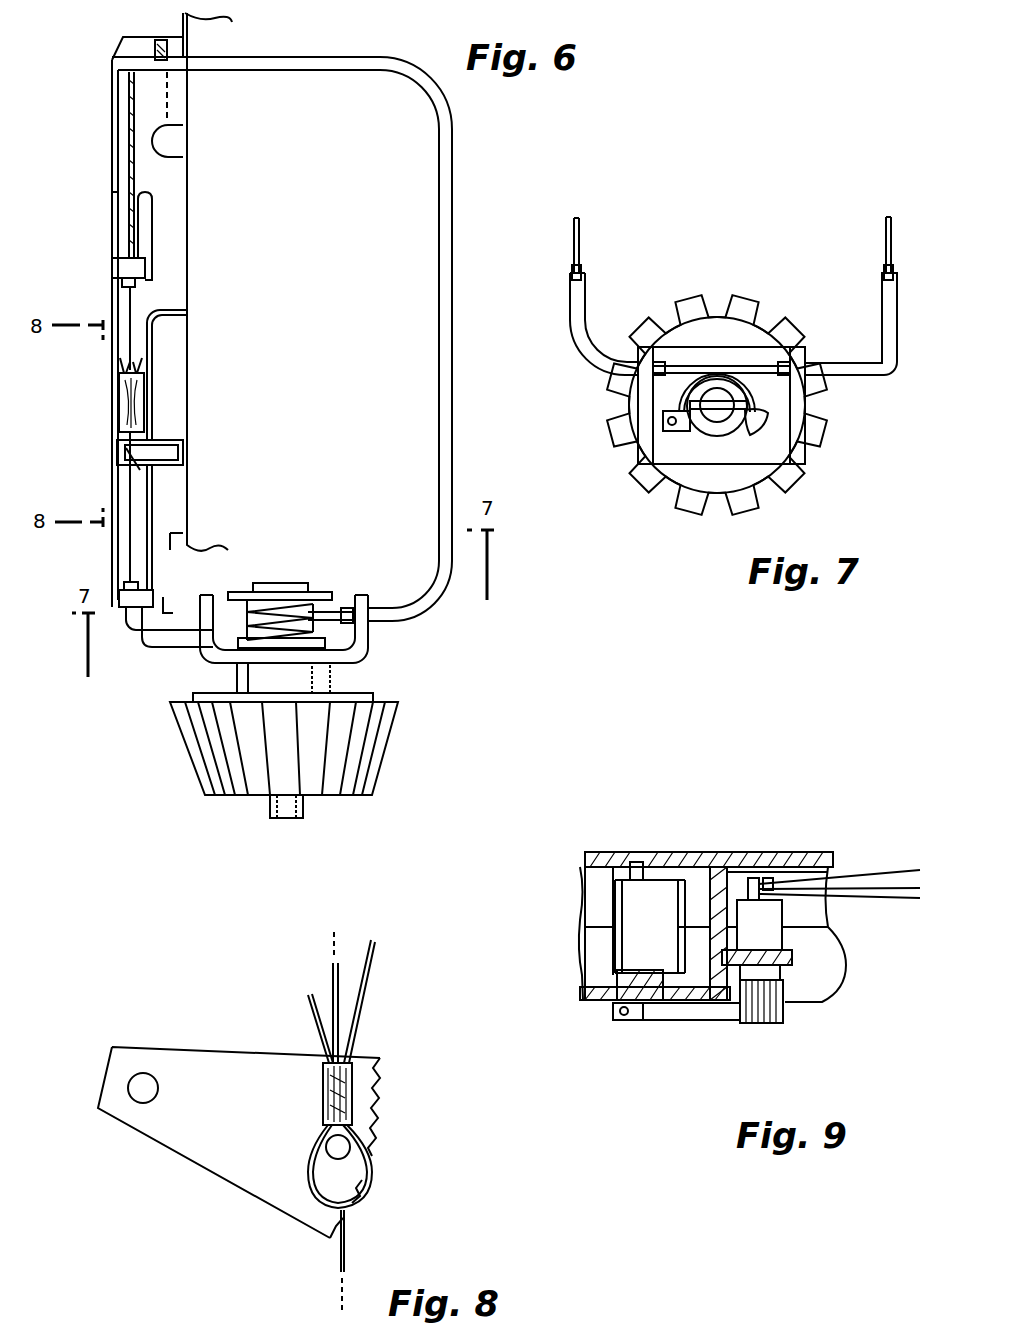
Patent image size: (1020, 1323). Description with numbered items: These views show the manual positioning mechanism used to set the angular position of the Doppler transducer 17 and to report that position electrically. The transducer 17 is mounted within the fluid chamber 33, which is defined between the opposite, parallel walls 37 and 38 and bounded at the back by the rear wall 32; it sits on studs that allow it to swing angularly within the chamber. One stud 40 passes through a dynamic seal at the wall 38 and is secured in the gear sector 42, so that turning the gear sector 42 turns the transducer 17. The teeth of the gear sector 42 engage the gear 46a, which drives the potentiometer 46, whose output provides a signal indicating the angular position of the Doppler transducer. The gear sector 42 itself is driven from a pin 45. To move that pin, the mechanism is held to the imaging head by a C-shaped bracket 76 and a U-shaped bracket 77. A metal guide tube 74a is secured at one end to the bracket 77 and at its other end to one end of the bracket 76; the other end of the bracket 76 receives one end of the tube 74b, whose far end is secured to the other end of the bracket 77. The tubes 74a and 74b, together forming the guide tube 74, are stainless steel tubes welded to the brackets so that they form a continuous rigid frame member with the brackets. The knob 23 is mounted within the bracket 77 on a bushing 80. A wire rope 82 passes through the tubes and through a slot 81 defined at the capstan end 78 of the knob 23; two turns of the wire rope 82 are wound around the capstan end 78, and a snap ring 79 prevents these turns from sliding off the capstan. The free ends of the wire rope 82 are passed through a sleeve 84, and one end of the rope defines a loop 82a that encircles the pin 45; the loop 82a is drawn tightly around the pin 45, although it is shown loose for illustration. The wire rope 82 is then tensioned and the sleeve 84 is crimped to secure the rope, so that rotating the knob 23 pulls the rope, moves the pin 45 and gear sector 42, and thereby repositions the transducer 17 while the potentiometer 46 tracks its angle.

In FIG. 9, the transducer 17 is at (668, 921).
In FIG. 6, the knob 23 is at (385, 735).
In FIG. 7, the knob 23 is at (690, 510).
In FIG. 9, the rear wall 32 is at (713, 895).
In FIG. 9, the fluid chamber 33 is at (590, 899).
In FIG. 9, the wall 37 is at (595, 855).
In FIG. 9, the wall 38 is at (585, 1000).
In FIG. 8, the stud 40 is at (143, 1073).
In FIG. 9, the stud 40 is at (640, 1022).
In FIG. 8, the gear sector 42 is at (225, 1167).
In FIG. 9, the gear sector 42 is at (693, 1022).
In FIG. 6, the pin 45 is at (180, 452).
In FIG. 8, the pin 45 is at (350, 1147).
In FIG. 9, the potentiometer 46 is at (770, 940).
In FIG. 9, the gear 46a is at (783, 1023).
In FIG. 7, the tube 74 is at (890, 378).
In FIG. 6, the metal guide tube 74a is at (452, 262).
In FIG. 6, the tube 74b is at (145, 650).
In FIG. 7, the tube 74b is at (580, 356).
In FIG. 6, the C-shaped bracket 76 is at (110, 268).
In FIG. 6, the U-shaped bracket 77 is at (368, 643).
In FIG. 7, the U-shaped bracket 77 is at (705, 347).
In FIG. 6, the capstan end 78 is at (275, 583).
In FIG. 7, the capstan end 78 is at (740, 398).
In FIG. 6, the snap ring 79 is at (320, 592).
In FIG. 7, the snap ring 79 is at (748, 435).
In FIG. 6, the bushing 80 is at (330, 675).
In FIG. 7, the slot 81 is at (692, 440).
In FIG. 6, the wire rope 82 is at (137, 298).
In FIG. 7, the wire rope 82 is at (580, 240).
In FIG. 8, the wire rope 82 is at (335, 978).
In FIG. 8, the loop 82a is at (366, 1197).
In FIG. 6, the sleeve 84 is at (142, 406).
In FIG. 8, the sleeve 84 is at (352, 1095).